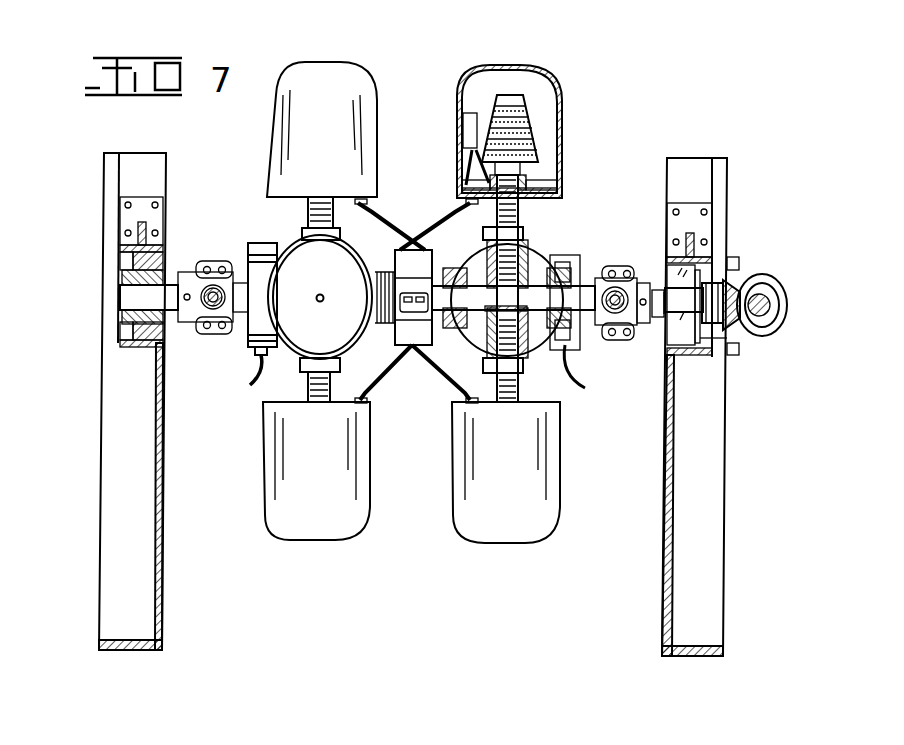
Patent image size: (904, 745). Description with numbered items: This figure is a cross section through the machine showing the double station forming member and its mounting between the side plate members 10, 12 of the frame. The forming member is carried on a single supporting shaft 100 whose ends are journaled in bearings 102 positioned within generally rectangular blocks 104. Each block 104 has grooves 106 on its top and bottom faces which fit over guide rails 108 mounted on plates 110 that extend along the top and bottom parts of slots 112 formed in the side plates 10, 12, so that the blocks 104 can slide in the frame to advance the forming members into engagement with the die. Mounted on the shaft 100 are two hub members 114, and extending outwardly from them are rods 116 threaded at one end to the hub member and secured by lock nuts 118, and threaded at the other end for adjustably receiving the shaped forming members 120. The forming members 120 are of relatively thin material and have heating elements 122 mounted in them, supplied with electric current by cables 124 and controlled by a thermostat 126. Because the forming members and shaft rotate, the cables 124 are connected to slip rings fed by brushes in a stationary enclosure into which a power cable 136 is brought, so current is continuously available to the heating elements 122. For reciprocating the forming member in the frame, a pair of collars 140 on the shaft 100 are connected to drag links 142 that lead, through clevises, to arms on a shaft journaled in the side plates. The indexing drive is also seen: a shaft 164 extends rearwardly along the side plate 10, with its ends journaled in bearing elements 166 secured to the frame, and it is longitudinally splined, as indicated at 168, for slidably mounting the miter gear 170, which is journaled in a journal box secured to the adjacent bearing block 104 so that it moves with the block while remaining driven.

The side plate member 10 is at (665, 537).
The side plate member 12 is at (160, 546).
The supporting shaft 100 is at (573, 297).
The bearing 102 is at (165, 284).
The rectangular block 104 is at (130, 261).
The groove 106 is at (130, 330).
The guide rail 108 is at (165, 250).
The plate 110 is at (140, 245).
The slot 112 is at (703, 338).
The hub member 114 is at (482, 345).
The rod 116 is at (518, 206).
The lock nut 118 is at (524, 236).
The forming member 120 is at (362, 535).
The heating element 122 is at (532, 118).
The cable 124 is at (408, 248).
The thermostat 126 is at (463, 120).
The power cable 136 is at (572, 338).
The collar 140 is at (183, 322).
The drag link 142 is at (214, 310).
The shaft 164 is at (774, 305).
The bearing element 166 is at (788, 330).
The spline 168 is at (757, 290).
The miter gear 170 is at (737, 287).